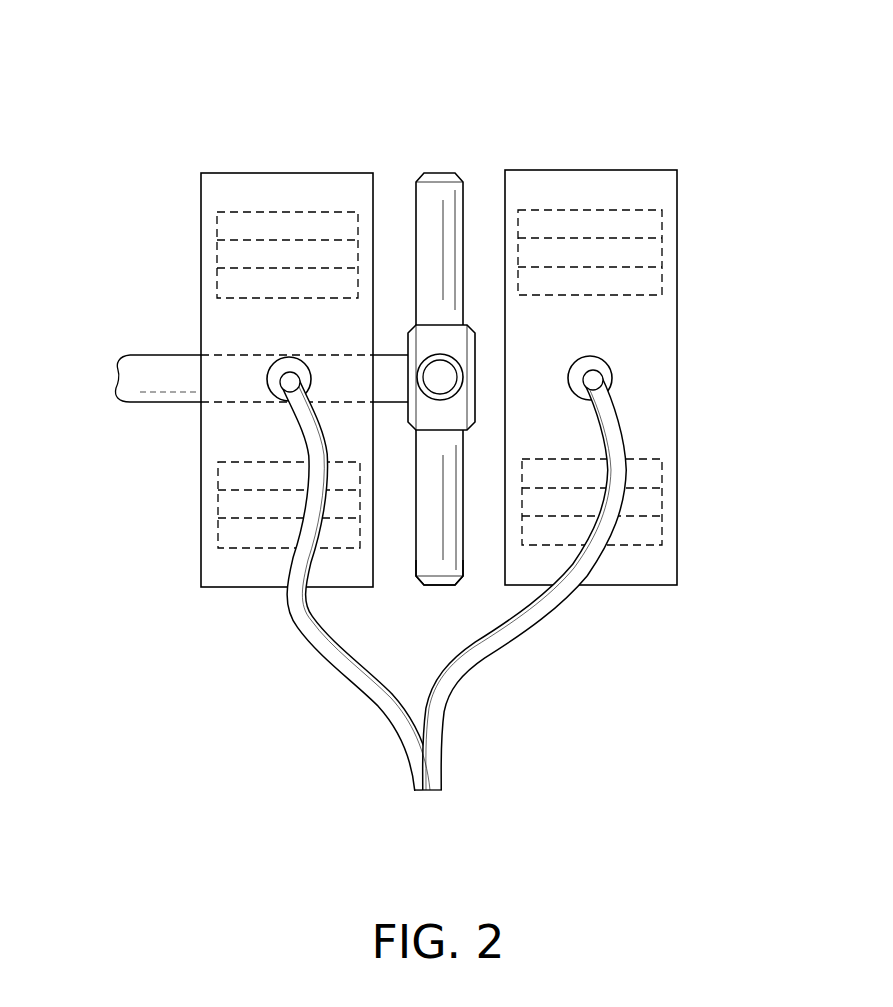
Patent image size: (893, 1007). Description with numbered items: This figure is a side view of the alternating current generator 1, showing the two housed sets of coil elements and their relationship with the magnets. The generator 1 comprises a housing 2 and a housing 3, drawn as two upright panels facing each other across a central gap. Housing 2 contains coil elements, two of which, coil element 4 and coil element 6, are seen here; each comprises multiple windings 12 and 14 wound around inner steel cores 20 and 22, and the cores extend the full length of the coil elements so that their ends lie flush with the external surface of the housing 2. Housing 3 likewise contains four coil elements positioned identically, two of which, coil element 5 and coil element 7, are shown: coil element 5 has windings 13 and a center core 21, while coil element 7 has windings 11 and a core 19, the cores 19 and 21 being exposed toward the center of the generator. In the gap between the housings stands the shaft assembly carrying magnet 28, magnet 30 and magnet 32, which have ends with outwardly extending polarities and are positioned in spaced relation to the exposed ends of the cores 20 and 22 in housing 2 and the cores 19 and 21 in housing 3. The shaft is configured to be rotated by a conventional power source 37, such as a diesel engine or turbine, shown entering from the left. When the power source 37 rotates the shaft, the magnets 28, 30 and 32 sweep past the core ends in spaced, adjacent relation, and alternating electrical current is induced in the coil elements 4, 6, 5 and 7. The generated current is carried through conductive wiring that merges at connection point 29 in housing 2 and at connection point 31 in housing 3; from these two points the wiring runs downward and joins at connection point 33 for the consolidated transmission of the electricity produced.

The alternating current generator 1 is at (365, 116).
The housing 2 is at (640, 170).
The housing 3 is at (201, 173).
The coil element 4 is at (666, 460).
The coil element 5 is at (236, 215).
The coil element 6 is at (660, 208).
The coil element 7 is at (218, 555).
The windings 11 is at (238, 535).
The windings 12 is at (648, 533).
The windings 13 is at (237, 283).
The windings 14 is at (636, 282).
The core 19 is at (238, 505).
The core 20 is at (648, 503).
The center core 21 is at (238, 263).
The core 22 is at (636, 254).
The magnet 28 is at (432, 567).
The connection point 29 is at (598, 368).
The magnet 30 is at (475, 353).
The connection point 31 is at (280, 381).
The magnet 32 is at (433, 185).
The connection point 33 is at (441, 787).
The power source 37 is at (150, 372).